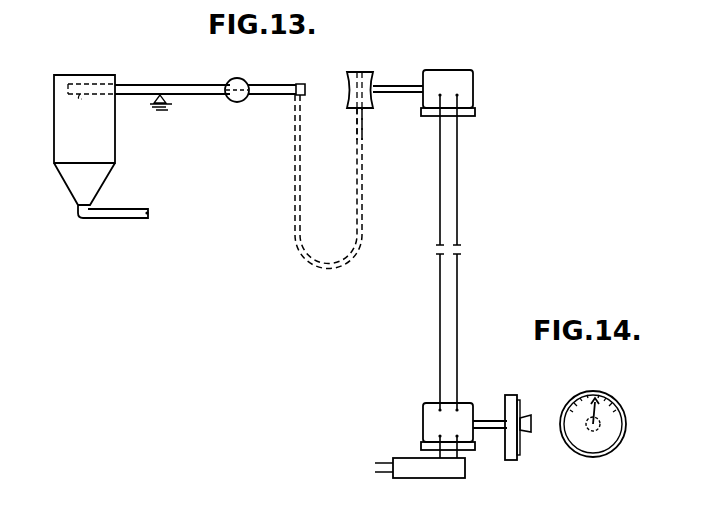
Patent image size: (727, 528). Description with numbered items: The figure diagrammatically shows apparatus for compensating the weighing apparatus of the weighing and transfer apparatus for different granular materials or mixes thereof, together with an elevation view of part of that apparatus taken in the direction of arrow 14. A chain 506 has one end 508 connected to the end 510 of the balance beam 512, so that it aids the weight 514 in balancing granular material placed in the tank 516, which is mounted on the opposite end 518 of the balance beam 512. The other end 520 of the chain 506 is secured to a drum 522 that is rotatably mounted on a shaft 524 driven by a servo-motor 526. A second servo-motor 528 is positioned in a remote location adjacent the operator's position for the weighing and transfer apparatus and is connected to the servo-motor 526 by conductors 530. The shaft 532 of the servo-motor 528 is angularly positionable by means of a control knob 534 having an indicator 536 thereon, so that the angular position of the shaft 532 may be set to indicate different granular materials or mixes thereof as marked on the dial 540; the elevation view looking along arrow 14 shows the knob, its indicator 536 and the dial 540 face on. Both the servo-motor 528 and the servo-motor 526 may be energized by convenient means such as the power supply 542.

In FIG. 13, the chain 506 is at (332, 270).
In FIG. 13, the end of chain 508 is at (300, 105).
In FIG. 13, the end of balance beam 510 is at (278, 92).
In FIG. 13, the balance beam 512 is at (196, 84).
In FIG. 13, the weight 514 is at (242, 80).
In FIG. 13, the tank 516 is at (62, 178).
In FIG. 13, the end of balance beam 518 is at (94, 74).
In FIG. 13, the other end of chain 520 is at (364, 128).
In FIG. 13, the drum 522 is at (370, 76).
In FIG. 13, the shaft 524 is at (389, 93).
In FIG. 13, the servo-motor 526 is at (474, 86).
In FIG. 13, the second servo-motor 528 is at (423, 405).
In FIG. 13, the conductors 530 is at (458, 318).
In FIG. 13, the shaft of servo-motor 532 is at (493, 418).
In FIG. 14, the control knob 534 is at (592, 432).
In FIG. 13, the indicator 536 is at (519, 402).
In FIG. 14, the indicator 536 is at (603, 408).
In FIG. 13, the dial 540 is at (520, 455).
In FIG. 14, the dial 540 is at (608, 442).
In FIG. 13, the power supply 542 is at (440, 480).
In FIG. 13, the arrow 14 is at (546, 448).